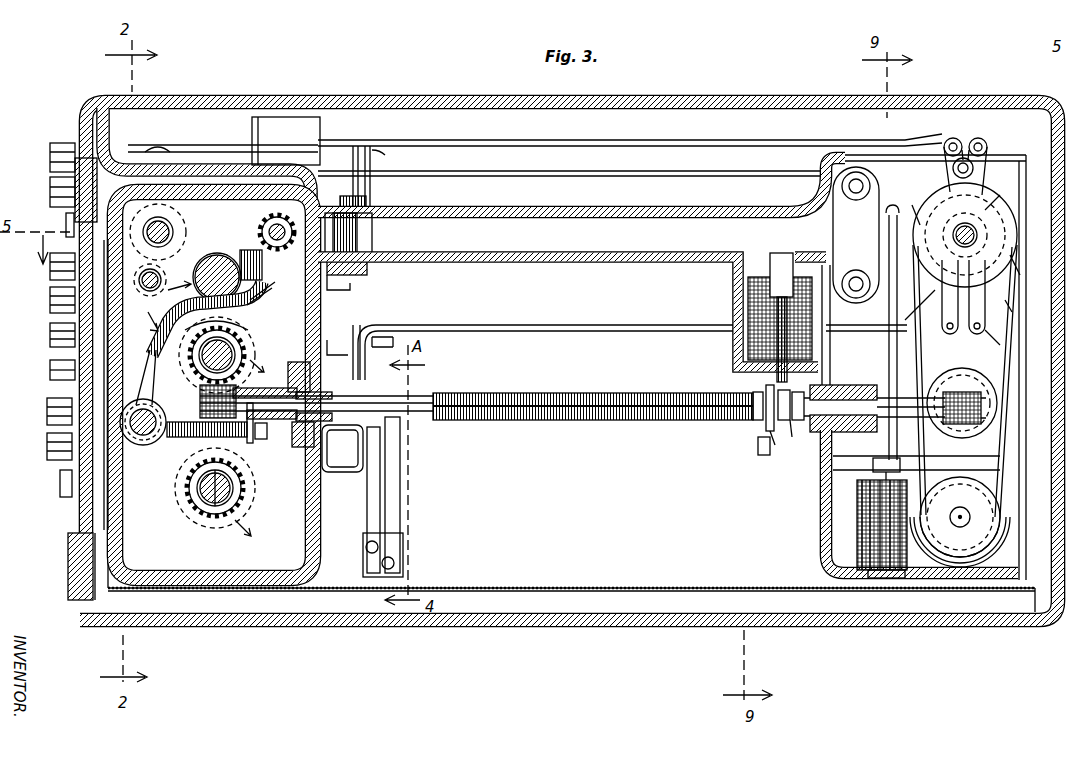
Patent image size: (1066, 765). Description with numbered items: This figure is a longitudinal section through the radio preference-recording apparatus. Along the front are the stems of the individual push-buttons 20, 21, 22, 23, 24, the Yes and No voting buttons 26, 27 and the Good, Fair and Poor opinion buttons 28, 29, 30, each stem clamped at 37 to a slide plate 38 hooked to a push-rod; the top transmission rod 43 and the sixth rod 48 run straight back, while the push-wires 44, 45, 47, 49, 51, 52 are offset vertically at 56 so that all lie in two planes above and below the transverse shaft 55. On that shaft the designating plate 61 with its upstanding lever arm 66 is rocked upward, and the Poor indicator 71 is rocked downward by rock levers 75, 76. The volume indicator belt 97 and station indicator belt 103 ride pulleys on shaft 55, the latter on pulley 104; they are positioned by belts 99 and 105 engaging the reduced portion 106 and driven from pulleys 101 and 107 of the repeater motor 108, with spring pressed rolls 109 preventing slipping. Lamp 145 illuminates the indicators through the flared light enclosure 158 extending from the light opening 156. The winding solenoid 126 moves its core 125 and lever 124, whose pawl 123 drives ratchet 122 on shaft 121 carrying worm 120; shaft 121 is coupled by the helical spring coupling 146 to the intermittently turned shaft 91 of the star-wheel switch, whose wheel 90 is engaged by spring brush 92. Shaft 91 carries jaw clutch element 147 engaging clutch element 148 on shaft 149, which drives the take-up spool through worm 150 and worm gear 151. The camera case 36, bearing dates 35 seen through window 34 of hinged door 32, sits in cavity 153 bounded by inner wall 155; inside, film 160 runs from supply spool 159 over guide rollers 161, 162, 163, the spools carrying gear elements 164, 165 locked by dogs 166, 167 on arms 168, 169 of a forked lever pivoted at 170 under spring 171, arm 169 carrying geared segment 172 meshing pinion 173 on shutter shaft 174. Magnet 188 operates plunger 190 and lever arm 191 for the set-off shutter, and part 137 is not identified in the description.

The push-button 20 is at (62, 141).
The push-button 21 is at (55, 182).
The push-button 22 is at (66, 218).
The push-button 23 is at (50, 265).
The push-button 24 is at (50, 295).
The voting button 26 is at (50, 334).
The voting button 27 is at (50, 372).
The opinion expressing button 28 is at (47, 412).
The opinion expressing button 29 is at (47, 450).
The opinion expressing button 30 is at (60, 485).
The hinged door 32 is at (68, 560).
The window 34 is at (85, 512).
The insertion and removal dates 35 is at (108, 347).
The camera case 36 is at (112, 263).
The clamp 37 is at (158, 148).
The slide plate 38 is at (203, 145).
The top transmission rod 43 is at (343, 140).
The push-wire 44 is at (353, 175).
The push-wire 45 is at (372, 152).
The push-wire 47 is at (488, 136).
The sixth transmission rod 48 is at (366, 342).
The push-wire 49 is at (337, 345).
The push-wire 51 is at (342, 448).
The push-wire 52 is at (580, 320).
The horizontal transverse shaft 55 is at (965, 222).
The vertical offset 56 is at (352, 288).
The individual designating plate 61 is at (905, 320).
The upstanding lever arm 66 is at (957, 138).
The Poor indicator 71 is at (915, 205).
The rock lever 75 is at (963, 300).
The rock lever 76 is at (988, 330).
The star wheel 90 is at (385, 443).
The intermittently turned shaft 91 is at (420, 396).
The spring brush 92 is at (392, 460).
The volume indicator belt 97 is at (960, 517).
The belt 99 is at (1008, 370).
The pulley 101 is at (1000, 388).
The tuning indicator belt 103 is at (1010, 312).
The pulley 104 is at (1012, 278).
The belt 105 is at (1000, 457).
The reduced intermediate portion 106 is at (990, 210).
The pulley 107 is at (1000, 510).
The repeater motor 108 is at (1000, 560).
The spring pressed roll 109 is at (973, 165).
The worm 120 is at (925, 398).
The shaft 121 is at (868, 390).
The ratchet 122 is at (753, 395).
The pawl 123 is at (758, 450).
The lever 124 is at (775, 447).
The core 125 is at (775, 330).
The winding solenoid 126 is at (748, 302).
The pin 137 is at (792, 440).
The lamp 145 is at (856, 205).
The helical spring coupling 146 is at (615, 420).
The jaw clutch element 147 is at (298, 447).
The clutch element 148 is at (288, 375).
The shaft 149 is at (252, 444).
The worm 150 is at (200, 404).
The worm gear 151 is at (238, 338).
The seat or cavity 153 is at (100, 596).
The inner wall 155 is at (368, 200).
The light opening 156 is at (348, 234).
The flared light enclosure 158 is at (505, 222).
The supply spool 159 is at (263, 526).
The film 160 is at (190, 505).
The guide roller 161 is at (262, 297).
The guide roller 162 is at (176, 222).
The guide roller 163 is at (162, 272).
The gear element 164 is at (215, 506).
The gear element 165 is at (267, 362).
The holding dog 166 is at (263, 440).
The holding dog 167 is at (226, 322).
The arm 168 is at (205, 436).
The arm 169 is at (203, 318).
The pivot 170 is at (163, 432).
The spring 171 is at (160, 408).
The geared segment 172 is at (222, 252).
The pinion 173 is at (276, 214).
The shutter shaft 174 is at (262, 228).
The magnet 188 is at (857, 515).
The plunger 190 is at (888, 370).
The lever arm 191 is at (893, 205).